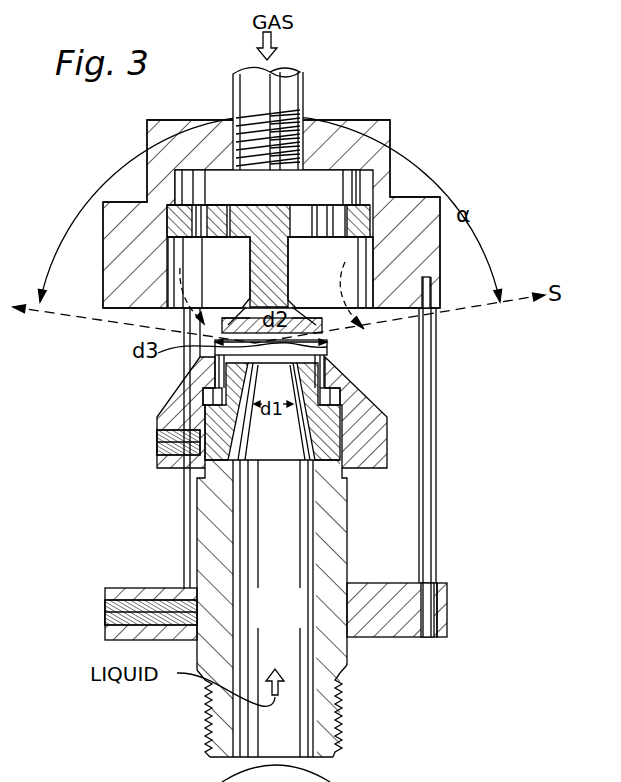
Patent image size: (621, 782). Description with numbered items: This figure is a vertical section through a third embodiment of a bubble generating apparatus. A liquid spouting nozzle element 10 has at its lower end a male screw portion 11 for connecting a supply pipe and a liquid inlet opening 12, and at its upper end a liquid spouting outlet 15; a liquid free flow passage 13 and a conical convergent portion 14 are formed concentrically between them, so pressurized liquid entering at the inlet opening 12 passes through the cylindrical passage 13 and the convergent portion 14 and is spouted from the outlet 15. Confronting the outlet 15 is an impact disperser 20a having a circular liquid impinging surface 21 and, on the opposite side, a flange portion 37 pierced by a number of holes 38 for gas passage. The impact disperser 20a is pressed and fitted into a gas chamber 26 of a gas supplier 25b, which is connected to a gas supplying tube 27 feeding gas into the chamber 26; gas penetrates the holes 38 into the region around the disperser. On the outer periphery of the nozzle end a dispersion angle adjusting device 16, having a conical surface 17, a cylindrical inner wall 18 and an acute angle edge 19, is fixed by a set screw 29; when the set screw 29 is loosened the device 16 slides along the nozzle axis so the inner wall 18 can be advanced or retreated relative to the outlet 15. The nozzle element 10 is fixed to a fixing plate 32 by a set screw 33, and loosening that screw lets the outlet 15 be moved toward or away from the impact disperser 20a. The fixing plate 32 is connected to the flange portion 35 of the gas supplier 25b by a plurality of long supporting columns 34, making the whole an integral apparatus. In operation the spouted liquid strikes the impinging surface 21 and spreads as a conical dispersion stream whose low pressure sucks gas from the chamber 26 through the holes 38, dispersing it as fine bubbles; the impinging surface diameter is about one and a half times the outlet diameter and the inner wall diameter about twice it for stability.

The liquid spouting nozzle element 10 is at (356, 533).
The male screw portion 11 is at (342, 708).
The liquid inlet opening 12 is at (290, 757).
The liquid free flow passage 13 is at (288, 619).
The conical convergent portion 14 is at (288, 453).
The liquid spouting outlet 15 is at (272, 380).
The dispersion angle adjusting device 16 is at (394, 442).
The conical surface 17 is at (172, 399).
The cylindrical inner wall 18 is at (338, 386).
The acute angle edge 19 is at (330, 349).
The impact disperser 20a is at (300, 298).
The circular liquid impinging surface 21 is at (302, 312).
The gas supplier 25b is at (397, 130).
The gas chamber 26 is at (326, 201).
The gas supplying tube 27 is at (305, 92).
The set screw 29 is at (158, 443).
The fixing plate 32 is at (398, 640).
The set screw 33 is at (158, 603).
The long supporting columns 34 is at (186, 506).
The flange portion 35 is at (108, 253).
The flange portion 37 is at (209, 280).
The holes 38 is at (208, 228).